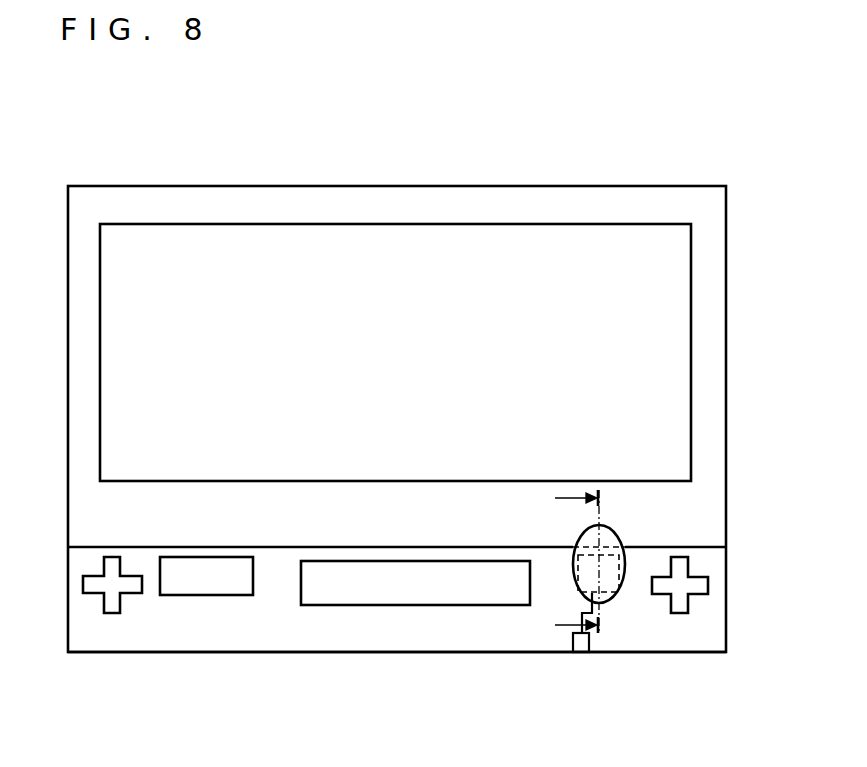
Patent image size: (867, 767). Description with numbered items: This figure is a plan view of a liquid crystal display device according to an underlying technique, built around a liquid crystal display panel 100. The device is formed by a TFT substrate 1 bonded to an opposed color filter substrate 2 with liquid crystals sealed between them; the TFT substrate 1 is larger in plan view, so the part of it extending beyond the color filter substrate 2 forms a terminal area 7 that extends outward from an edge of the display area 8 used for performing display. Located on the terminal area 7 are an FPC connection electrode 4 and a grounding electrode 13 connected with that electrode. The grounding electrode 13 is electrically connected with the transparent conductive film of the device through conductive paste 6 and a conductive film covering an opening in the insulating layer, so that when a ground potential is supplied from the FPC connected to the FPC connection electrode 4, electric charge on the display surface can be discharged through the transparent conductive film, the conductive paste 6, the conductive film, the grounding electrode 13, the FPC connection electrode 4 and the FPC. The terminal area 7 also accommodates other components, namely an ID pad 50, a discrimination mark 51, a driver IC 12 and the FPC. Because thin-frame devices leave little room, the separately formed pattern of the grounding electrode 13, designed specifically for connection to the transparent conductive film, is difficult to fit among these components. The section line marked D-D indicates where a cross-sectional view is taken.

The liquid crystal display panel 100 is at (397, 410).
The TFT substrate 1 is at (422, 652).
The color filter substrate 2 is at (668, 186).
The FPC connection electrode 4 is at (582, 645).
The conductive paste 6 is at (619, 532).
The terminal area 7 is at (83, 637).
The display area 8 is at (602, 243).
The driver IC 12 is at (367, 597).
The grounding electrode 13 is at (610, 608).
The ID pad 50 is at (223, 585).
The discrimination mark 51 is at (113, 605).